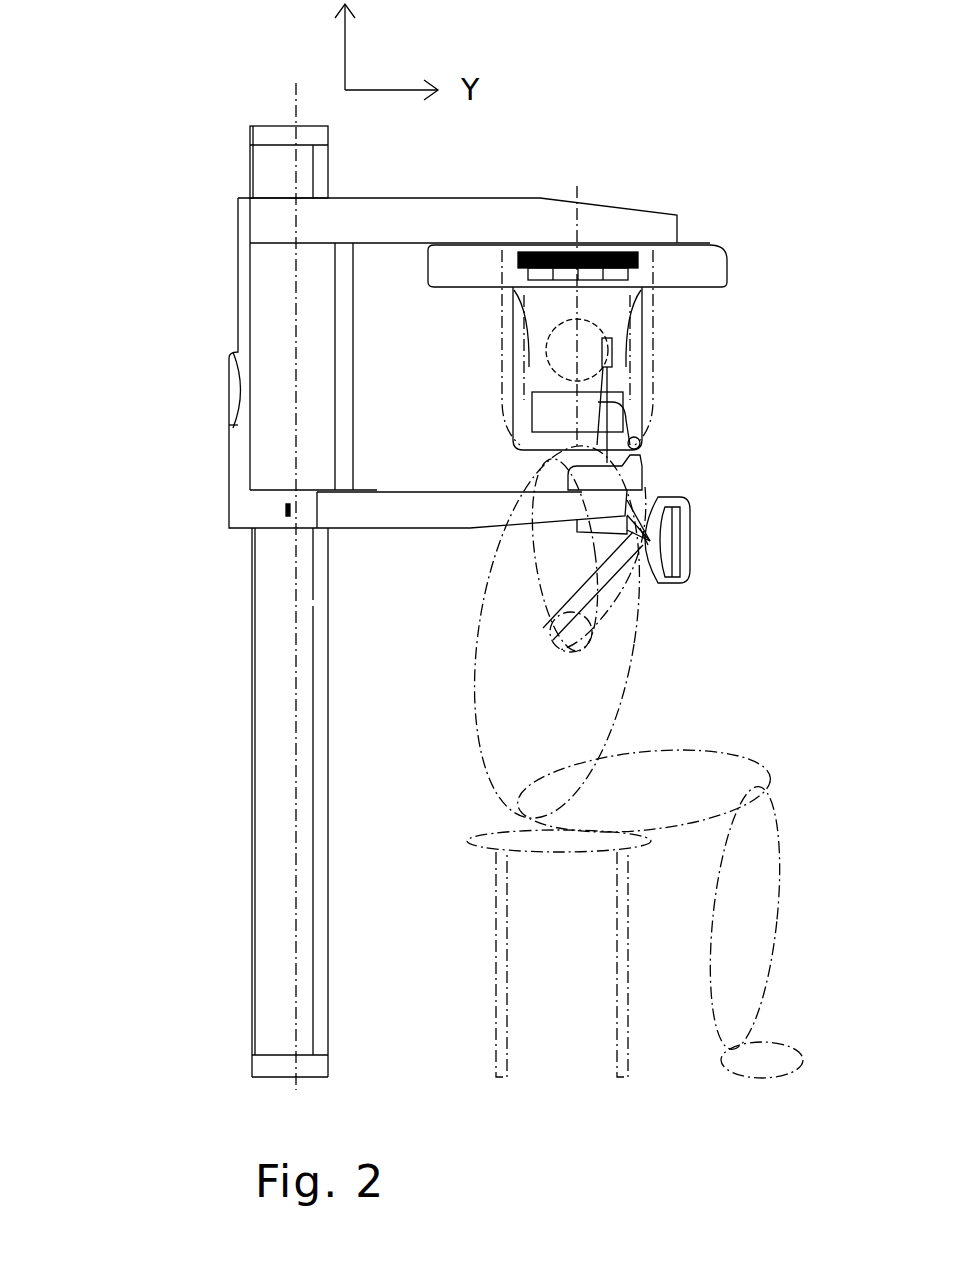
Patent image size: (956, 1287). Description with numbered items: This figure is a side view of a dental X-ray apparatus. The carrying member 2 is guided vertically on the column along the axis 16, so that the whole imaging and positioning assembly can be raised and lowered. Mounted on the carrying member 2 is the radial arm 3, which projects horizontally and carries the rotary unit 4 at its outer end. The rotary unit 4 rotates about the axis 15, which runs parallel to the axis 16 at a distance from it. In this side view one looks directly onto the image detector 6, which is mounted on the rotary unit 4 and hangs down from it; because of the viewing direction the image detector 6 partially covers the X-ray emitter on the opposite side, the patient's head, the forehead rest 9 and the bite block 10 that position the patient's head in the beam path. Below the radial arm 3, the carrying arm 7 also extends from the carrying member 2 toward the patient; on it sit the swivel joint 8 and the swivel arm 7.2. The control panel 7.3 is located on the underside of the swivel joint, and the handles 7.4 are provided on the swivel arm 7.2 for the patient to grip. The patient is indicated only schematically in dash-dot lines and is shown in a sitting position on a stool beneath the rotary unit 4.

The carrying member 2 is at (278, 443).
The radial arm 3 is at (517, 215).
The rotary unit 4 is at (700, 260).
The image detector 6 is at (652, 370).
The carrying arm 7 is at (364, 513).
The swivel arm 7.2 is at (632, 478).
The control panel 7.3 is at (675, 568).
The handles 7.4 is at (655, 505).
The swivel joint 8 is at (650, 543).
The forehead rest 9 is at (606, 346).
The bite block 10 is at (633, 410).
The axis 15 is at (580, 188).
The axis 16 is at (293, 93).